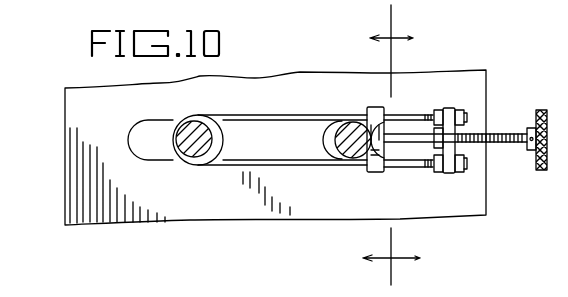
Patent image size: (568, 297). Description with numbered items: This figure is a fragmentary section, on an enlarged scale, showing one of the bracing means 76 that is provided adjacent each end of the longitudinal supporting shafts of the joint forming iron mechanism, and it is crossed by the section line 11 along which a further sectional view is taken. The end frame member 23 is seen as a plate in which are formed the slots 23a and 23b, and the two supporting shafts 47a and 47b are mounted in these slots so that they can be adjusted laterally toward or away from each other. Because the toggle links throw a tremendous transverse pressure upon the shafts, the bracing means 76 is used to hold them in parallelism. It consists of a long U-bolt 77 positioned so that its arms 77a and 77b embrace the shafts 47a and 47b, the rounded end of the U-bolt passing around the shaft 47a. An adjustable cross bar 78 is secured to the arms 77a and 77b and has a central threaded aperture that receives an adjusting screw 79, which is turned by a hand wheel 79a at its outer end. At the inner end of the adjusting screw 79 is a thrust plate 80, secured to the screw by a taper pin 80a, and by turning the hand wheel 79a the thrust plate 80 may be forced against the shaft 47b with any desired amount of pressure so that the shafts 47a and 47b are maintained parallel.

The section line 11— 11 is at (403, 145).
The end frame member 23 is at (76, 107).
The slot 23a is at (164, 111).
The slot 23b is at (327, 119).
The longitudinal supporting shaft 47a is at (198, 150).
The longitudinal supporting shaft 47b is at (357, 157).
The bracing means 76 is at (283, 104).
The U-bolt 77 is at (229, 101).
The arm of U-bolt 77a is at (270, 119).
The arm of U-bolt 77b is at (282, 166).
The adjustable cross bar 78 is at (448, 108).
The adjusting screw 79 is at (502, 146).
The hand wheel 79a is at (536, 112).
The thrust plate 80 is at (386, 107).
The taper pin 80a is at (410, 108).